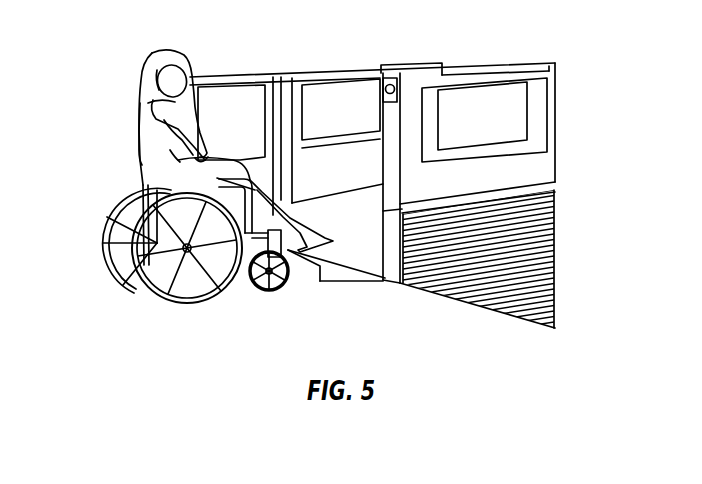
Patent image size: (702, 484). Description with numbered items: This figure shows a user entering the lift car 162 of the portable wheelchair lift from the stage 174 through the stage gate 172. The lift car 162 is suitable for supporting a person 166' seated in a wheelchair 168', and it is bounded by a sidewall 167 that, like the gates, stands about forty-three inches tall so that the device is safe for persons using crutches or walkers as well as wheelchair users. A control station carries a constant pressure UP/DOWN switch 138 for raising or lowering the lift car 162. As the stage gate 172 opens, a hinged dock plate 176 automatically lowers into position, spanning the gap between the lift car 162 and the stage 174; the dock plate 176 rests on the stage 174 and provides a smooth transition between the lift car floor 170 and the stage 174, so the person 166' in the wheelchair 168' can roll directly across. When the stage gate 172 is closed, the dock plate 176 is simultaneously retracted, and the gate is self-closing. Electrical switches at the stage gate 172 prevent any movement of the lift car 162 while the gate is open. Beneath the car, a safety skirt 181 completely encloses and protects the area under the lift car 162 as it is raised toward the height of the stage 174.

The lift car 162 is at (514, 60).
The stage gate 172 is at (231, 78).
The UP/DOWN switch 138 is at (390, 77).
The sidewall 167 is at (547, 163).
The safety skirt 181 is at (523, 262).
The stage 174 is at (472, 324).
The lift car floor 170 is at (375, 245).
The hinged dock plate 176 is at (315, 267).
The person 166' is at (200, 151).
The wheelchair 168' is at (184, 219).